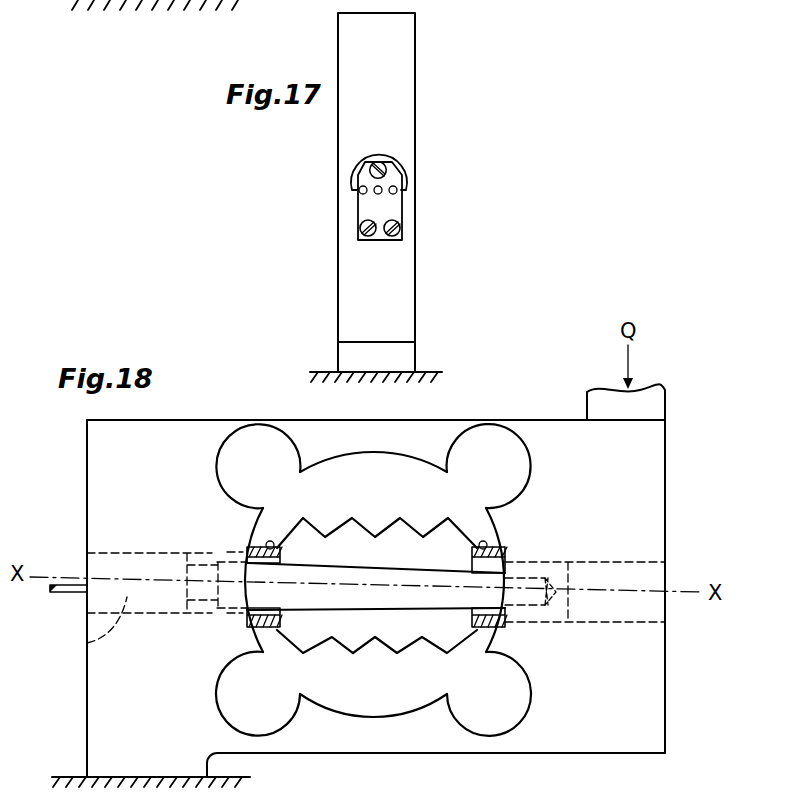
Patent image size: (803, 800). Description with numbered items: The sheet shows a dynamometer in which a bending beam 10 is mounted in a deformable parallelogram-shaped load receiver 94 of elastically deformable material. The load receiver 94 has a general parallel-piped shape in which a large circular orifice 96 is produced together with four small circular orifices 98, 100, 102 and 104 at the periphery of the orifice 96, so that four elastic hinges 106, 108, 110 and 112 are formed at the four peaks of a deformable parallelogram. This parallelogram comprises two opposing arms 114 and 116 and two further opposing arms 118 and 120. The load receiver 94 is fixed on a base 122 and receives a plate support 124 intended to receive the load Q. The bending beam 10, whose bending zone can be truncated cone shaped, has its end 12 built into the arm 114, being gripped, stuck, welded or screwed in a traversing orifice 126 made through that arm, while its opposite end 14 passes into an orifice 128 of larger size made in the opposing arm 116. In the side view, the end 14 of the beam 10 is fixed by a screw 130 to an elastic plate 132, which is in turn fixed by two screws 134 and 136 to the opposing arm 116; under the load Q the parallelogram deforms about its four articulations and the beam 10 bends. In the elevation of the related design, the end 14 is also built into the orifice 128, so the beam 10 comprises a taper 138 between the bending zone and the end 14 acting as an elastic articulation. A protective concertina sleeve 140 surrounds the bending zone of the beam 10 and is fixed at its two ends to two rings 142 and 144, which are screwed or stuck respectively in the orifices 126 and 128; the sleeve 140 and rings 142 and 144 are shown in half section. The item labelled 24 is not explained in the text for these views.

In FIG. 18, the bending beam 10 is at (379, 571).
In FIG. 18, the built-in end 12 is at (87, 644).
In FIG. 18, the opposite end 14 is at (633, 592).
In FIG. 18, the shaft end 24 is at (68, 596).
In FIG. 17, the load receiver 94 is at (420, 289).
In FIG. 18, the load receiver 94 is at (230, 414).
In FIG. 18, the circular orifice 96 is at (382, 716).
In FIG. 18, the circular orifice 98 is at (298, 456).
In FIG. 18, the circular orifice 100 is at (450, 456).
In FIG. 18, the circular orifice 102 is at (462, 712).
In FIG. 18, the circular orifice 104 is at (292, 716).
In FIG. 18, the elastic hinge 106 is at (256, 423).
In FIG. 18, the elastic hinge 108 is at (494, 424).
In FIG. 18, the elastic hinge 110 is at (495, 742).
In FIG. 18, the elastic hinge 112 is at (261, 741).
In FIG. 18, the arm 114 is at (100, 687).
In FIG. 17, the opposing arm 116 is at (405, 98).
In FIG. 18, the opposing arm 116 is at (645, 694).
In FIG. 18, the arm 118 is at (368, 440).
In FIG. 18, the arm 120 is at (361, 738).
In FIG. 17, the base 122 is at (430, 372).
In FIG. 18, the base 122 is at (70, 777).
In FIG. 18, the plate support 124 is at (650, 409).
In FIG. 18, the traversing orifice 126 is at (209, 551).
In FIG. 18, the orifice 128 is at (548, 562).
In FIG. 17, the screw 130 is at (386, 171).
In FIG. 17, the elastic plate 132 is at (368, 211).
In FIG. 17, the screw 134 is at (368, 236).
In FIG. 17, the screw 136 is at (400, 230).
In FIG. 18, the taper 138 is at (556, 602).
In FIG. 18, the protective concertina sleeve 140 is at (373, 652).
In FIG. 18, the ring 142 is at (262, 651).
In FIG. 18, the ring 144 is at (487, 651).